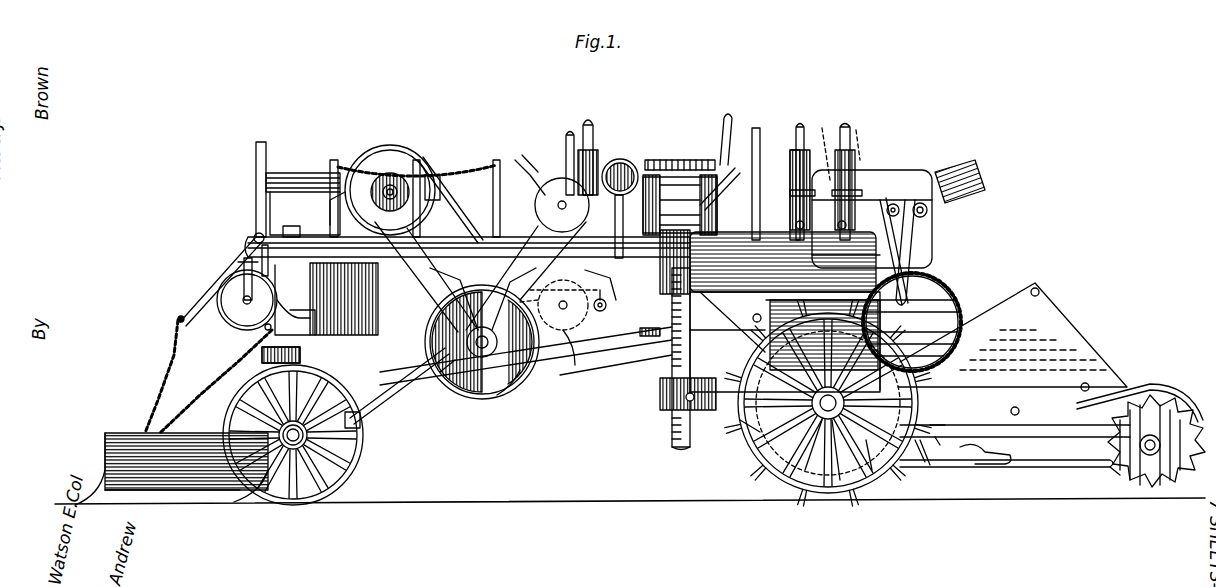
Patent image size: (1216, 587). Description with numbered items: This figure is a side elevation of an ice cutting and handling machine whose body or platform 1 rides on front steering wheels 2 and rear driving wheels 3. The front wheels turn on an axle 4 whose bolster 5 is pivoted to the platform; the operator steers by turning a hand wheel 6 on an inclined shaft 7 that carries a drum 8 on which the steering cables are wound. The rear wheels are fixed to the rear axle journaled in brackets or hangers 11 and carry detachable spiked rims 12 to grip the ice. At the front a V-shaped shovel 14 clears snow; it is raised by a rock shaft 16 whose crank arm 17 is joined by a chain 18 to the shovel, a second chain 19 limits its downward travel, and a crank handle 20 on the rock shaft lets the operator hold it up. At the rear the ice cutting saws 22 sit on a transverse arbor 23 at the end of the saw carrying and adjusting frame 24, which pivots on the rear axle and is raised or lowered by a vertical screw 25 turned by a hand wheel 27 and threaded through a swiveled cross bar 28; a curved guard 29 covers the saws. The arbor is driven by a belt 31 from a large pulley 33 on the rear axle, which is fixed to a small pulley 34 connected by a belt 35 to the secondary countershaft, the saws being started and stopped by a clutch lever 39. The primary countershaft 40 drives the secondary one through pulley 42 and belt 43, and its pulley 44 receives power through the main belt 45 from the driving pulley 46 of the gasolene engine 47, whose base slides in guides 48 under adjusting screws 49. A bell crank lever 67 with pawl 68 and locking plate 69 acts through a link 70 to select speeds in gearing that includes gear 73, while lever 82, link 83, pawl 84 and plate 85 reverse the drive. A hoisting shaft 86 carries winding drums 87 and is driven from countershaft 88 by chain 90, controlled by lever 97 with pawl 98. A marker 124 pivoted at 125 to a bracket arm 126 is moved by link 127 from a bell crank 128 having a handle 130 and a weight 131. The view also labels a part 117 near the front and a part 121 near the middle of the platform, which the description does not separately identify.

The body or platform 1 is at (452, 228).
The front steering wheels 2 is at (352, 447).
The rear driving wheels 3 is at (742, 435).
The axle 4 is at (295, 445).
The bolster 5 is at (263, 300).
The hand wheel 6 is at (726, 118).
The shaft 7 is at (410, 375).
The drum 8 is at (375, 412).
The brackets or hangers 11 is at (738, 338).
The spiked rims 12 is at (770, 455).
The V-shaped shovel or plow 14 is at (105, 475).
The rock shaft 16 is at (792, 468).
The crank arm 17 is at (215, 286).
The chain 18 is at (165, 378).
The chain 19 is at (222, 378).
The crank handle 20 is at (256, 186).
The ice cutting saws 22 is at (1155, 485).
The arbor 23 is at (1112, 470).
The saw carrying and adjusting frame 24 is at (1002, 415).
The screw 25 is at (672, 348).
The hand wheel 27 is at (664, 172).
The cross bar 28 is at (662, 398).
The curved guard 29 is at (1158, 384).
The belt 31 is at (1045, 462).
The large pulley 33 is at (822, 420).
The small pulley 34 is at (833, 422).
The belt 35 is at (745, 428).
The lever 39 is at (758, 128).
The primary countershaft 40 is at (440, 380).
The pulley 42 is at (508, 392).
The belt 43 is at (620, 368).
The pulley 44 is at (470, 392).
The belt 45 is at (331, 313).
The driving pulley 46 is at (428, 174).
The gasolene engine 47 is at (288, 178).
The guides 48 is at (395, 172).
The screws 49 is at (448, 205).
The lever 67 is at (850, 125).
The pawl 68 is at (860, 165).
The segmental locking or ratchet plate 69 is at (840, 205).
The link 70 is at (908, 252).
The gear 73 is at (938, 292).
The lever 82 is at (800, 127).
The link 83 is at (872, 180).
The pawl 84 is at (793, 155).
The locking or ratchet plate 85 is at (800, 196).
The transverse shaft 86 is at (563, 318).
The winding drums 87 is at (574, 366).
The countershaft 88 is at (601, 312).
The chain 90 is at (647, 340).
The lever 97 is at (590, 140).
The pawl 98 is at (568, 170).
The pin 117 is at (250, 272).
The pulley 121 is at (527, 242).
The marker 124 is at (1005, 488).
The pivot 125 is at (916, 462).
The bracket arm 126 is at (870, 455).
The link 127 is at (935, 432).
The bell crank lever 128 is at (885, 200).
The handle 130 is at (836, 138).
The weight 131 is at (962, 170).